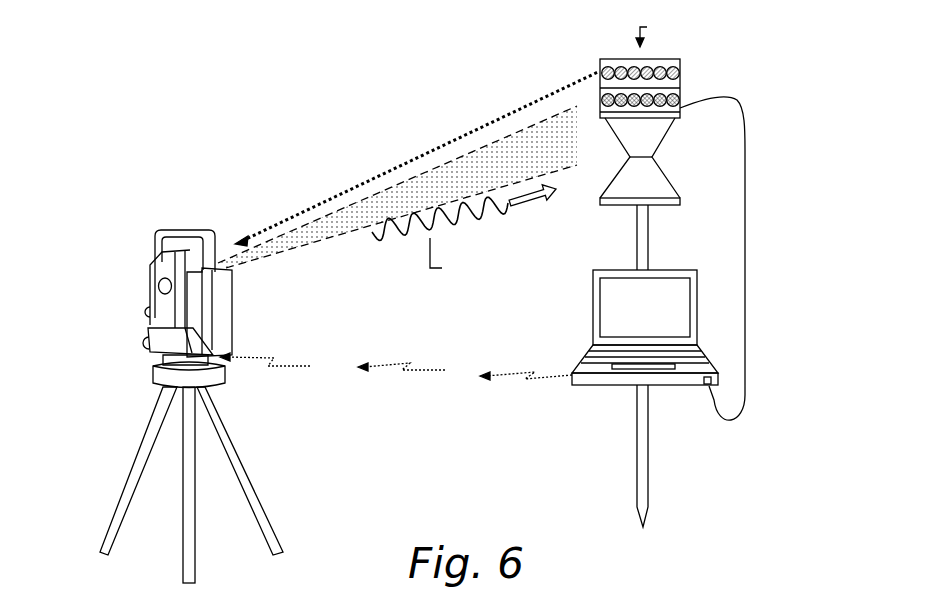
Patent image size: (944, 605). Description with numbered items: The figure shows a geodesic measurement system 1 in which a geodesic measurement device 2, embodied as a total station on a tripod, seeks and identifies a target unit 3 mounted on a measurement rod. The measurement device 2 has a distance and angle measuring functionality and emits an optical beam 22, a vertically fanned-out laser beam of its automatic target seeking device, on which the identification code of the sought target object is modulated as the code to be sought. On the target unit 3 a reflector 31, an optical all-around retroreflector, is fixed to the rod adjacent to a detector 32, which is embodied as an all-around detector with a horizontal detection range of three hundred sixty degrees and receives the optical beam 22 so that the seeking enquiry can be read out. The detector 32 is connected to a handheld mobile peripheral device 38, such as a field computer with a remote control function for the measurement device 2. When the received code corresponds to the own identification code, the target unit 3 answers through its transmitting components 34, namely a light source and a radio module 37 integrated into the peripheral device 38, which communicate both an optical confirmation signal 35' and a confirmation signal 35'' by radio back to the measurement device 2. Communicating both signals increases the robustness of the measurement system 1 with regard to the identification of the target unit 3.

The geodesic measurement system 1 is at (102, 88).
The geodesic measurement device 2 is at (122, 247).
The target unit 3 is at (690, 446).
The optical beam 22 is at (270, 248).
The reflector 31 is at (663, 188).
The detector 32 is at (680, 88).
The transmitting components 34 is at (668, 68).
The optical confirmation signal 35' is at (416, 159).
The confirmation signal by radio 35'' is at (396, 378).
The radio module 37 is at (588, 388).
The peripheral device 38 is at (593, 314).